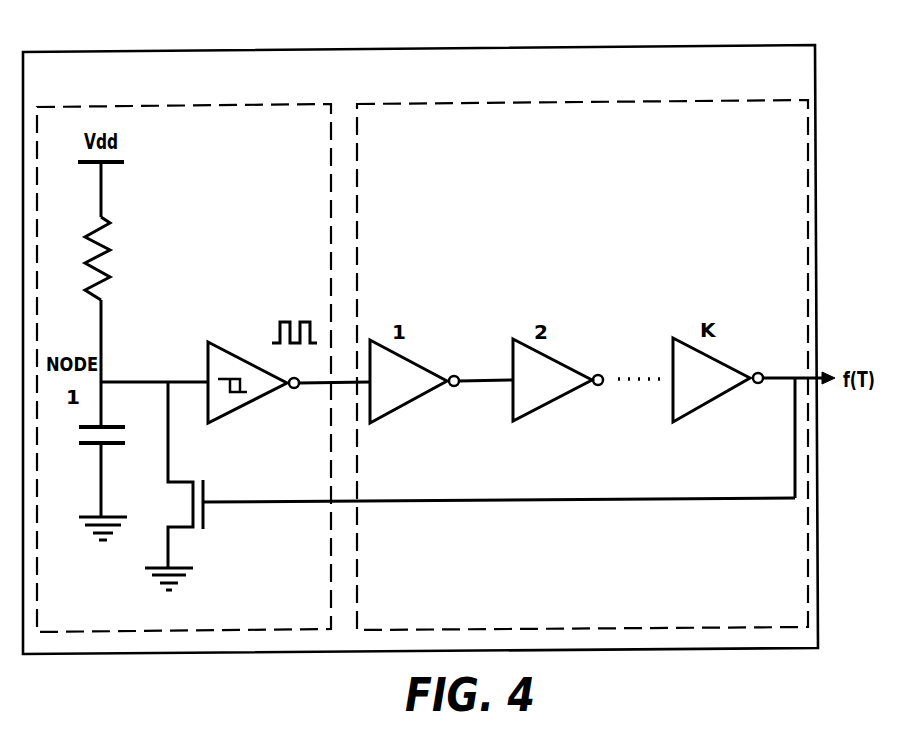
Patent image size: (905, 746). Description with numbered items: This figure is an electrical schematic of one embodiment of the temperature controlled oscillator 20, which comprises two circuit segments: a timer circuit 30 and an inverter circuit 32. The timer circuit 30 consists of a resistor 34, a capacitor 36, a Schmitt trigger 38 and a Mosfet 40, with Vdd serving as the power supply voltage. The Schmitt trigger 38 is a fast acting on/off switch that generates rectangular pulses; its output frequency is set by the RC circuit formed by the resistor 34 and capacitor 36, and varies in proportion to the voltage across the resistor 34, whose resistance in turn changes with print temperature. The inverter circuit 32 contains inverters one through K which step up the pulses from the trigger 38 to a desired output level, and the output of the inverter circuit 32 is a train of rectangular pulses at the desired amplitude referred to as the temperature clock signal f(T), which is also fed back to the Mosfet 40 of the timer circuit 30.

The oscillator 20 is at (733, 45).
The timer circuit 30 is at (220, 105).
The inverter circuit 32 is at (543, 103).
The resistor 34 is at (108, 262).
The capacitor 36 is at (97, 450).
The Schmitt trigger 38 is at (243, 355).
The Mosfet 40 is at (195, 481).